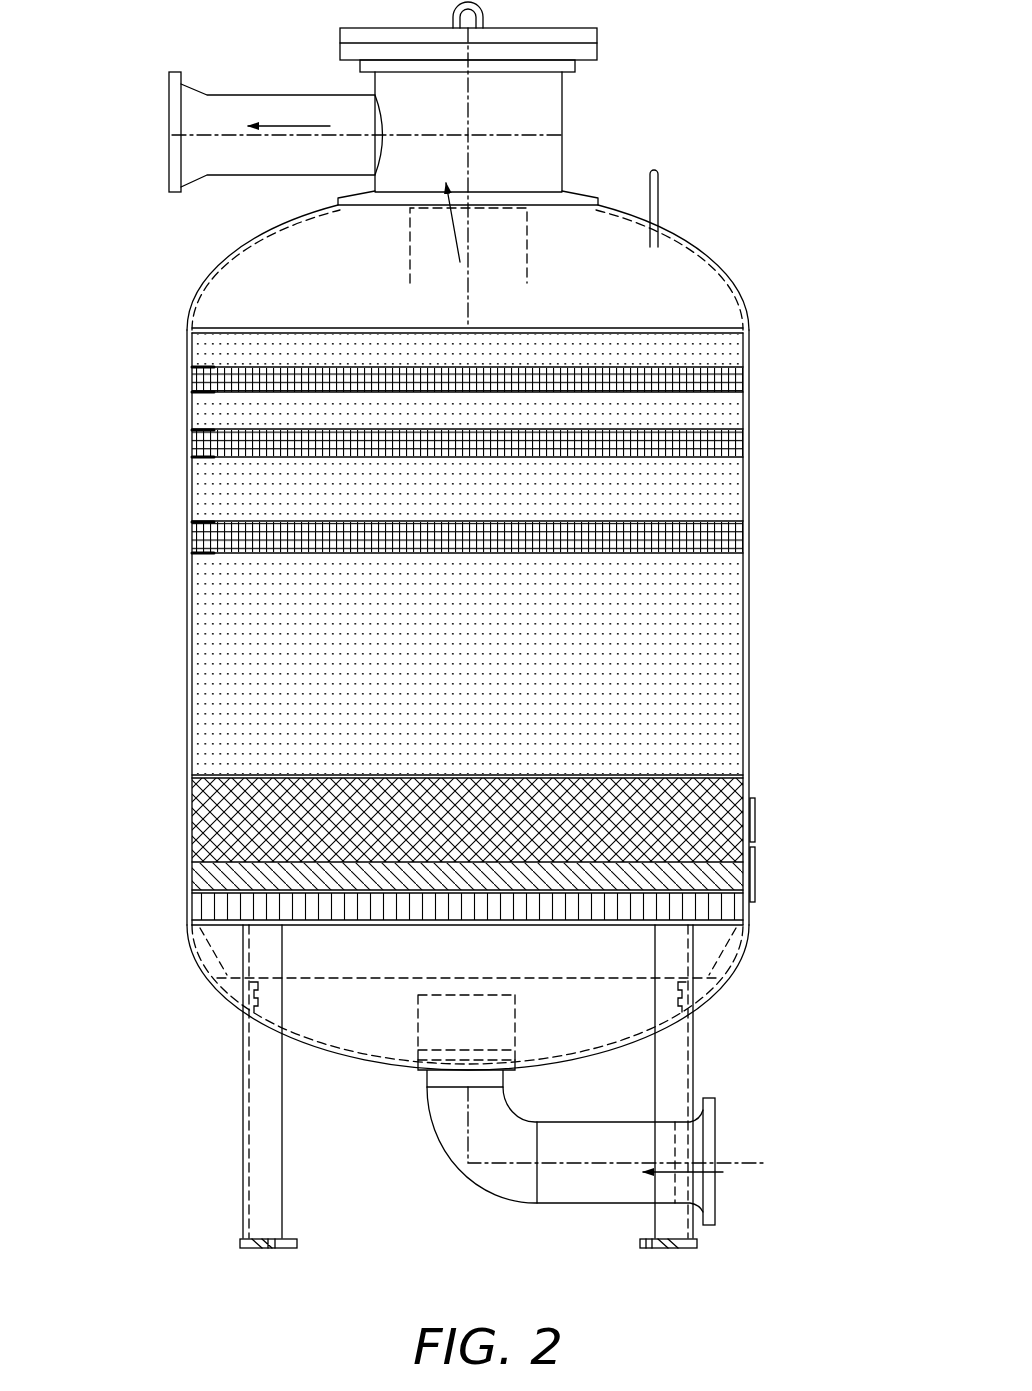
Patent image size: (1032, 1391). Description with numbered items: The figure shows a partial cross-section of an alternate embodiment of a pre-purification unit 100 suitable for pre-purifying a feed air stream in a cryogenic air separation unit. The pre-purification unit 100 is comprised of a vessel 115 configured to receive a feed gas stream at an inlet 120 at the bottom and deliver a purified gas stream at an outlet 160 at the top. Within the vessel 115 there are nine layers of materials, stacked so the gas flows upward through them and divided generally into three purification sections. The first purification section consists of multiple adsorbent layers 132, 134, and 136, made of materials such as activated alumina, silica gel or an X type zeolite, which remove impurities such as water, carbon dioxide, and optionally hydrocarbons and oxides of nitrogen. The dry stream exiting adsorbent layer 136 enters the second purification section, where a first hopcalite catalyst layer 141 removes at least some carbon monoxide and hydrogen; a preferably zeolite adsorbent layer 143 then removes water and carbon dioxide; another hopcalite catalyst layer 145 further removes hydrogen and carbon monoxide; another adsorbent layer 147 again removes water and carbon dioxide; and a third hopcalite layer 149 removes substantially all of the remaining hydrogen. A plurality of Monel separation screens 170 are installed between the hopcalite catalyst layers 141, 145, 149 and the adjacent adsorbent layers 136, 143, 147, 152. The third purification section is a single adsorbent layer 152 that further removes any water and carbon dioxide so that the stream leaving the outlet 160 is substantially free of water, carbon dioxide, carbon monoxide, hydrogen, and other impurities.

The pre-purification unit 100 is at (779, 62).
The vessel 115 is at (680, 238).
The inlet 120 is at (715, 1140).
The adsorbent layer 132 is at (727, 874).
The adsorbent layer 134 is at (710, 815).
The adsorbent layer 136 is at (718, 672).
The first hopcalite catalyst layer 141 is at (708, 537).
The adsorbent layer 143 is at (717, 485).
The second hopcalite catalyst layer 145 is at (725, 445).
The adsorbent layer 147 is at (730, 418).
The third hopcalite layer 149 is at (726, 383).
The adsorbent layer 152 is at (740, 357).
The outlet 160 is at (182, 122).
The Monel separation screens 170 is at (210, 553).